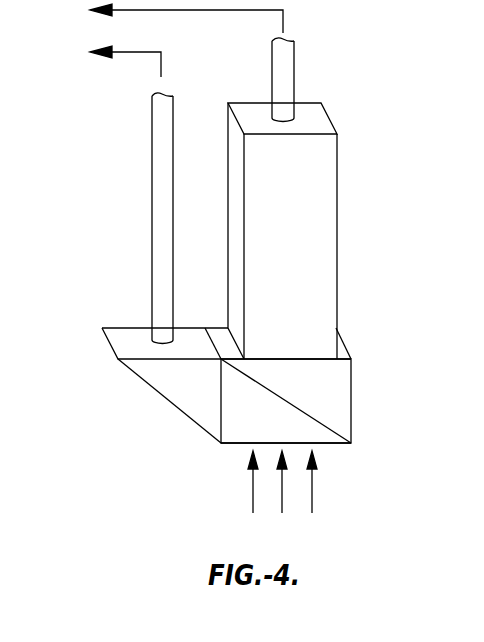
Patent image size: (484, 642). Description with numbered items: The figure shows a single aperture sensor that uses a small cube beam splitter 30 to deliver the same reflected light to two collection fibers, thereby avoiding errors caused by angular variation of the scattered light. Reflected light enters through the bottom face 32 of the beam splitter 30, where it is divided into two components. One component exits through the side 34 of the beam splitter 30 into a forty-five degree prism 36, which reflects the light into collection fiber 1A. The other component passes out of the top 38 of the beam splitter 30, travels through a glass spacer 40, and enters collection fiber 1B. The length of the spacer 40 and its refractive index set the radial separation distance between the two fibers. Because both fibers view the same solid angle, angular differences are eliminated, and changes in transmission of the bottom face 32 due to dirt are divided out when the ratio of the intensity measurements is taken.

The collection fiber A 1A is at (111, 57).
The collection fiber B 1B is at (172, 16).
The beam splitter 30 is at (315, 385).
The bottom face 32 is at (327, 444).
The side 34 is at (214, 412).
The 45 degree prism 36 is at (155, 385).
The top 38 is at (336, 367).
The glass spacer 40 is at (315, 231).